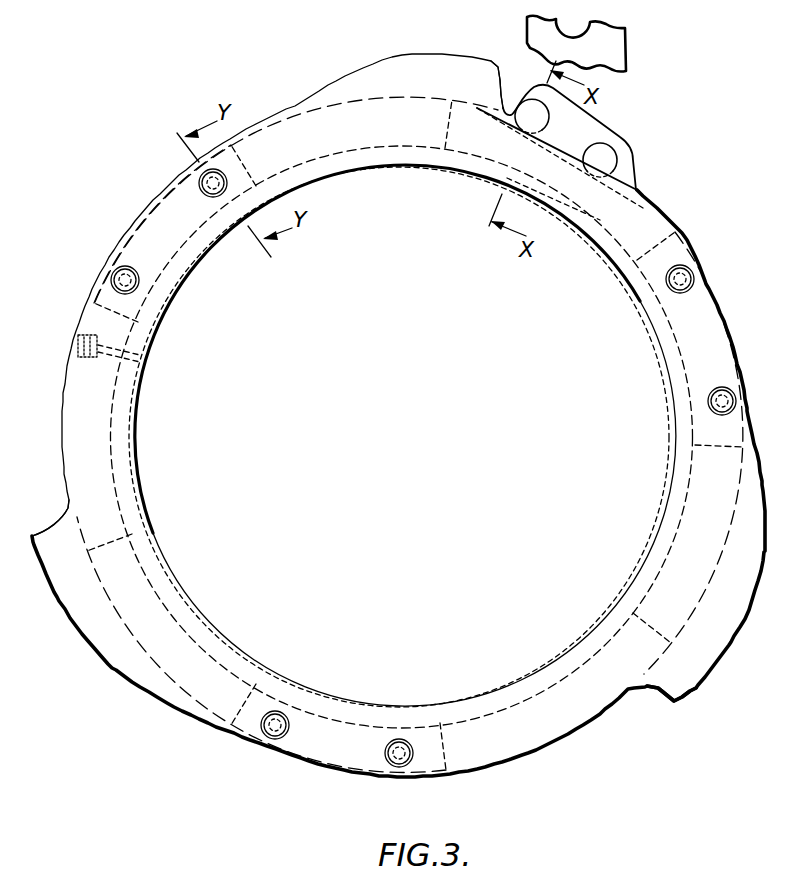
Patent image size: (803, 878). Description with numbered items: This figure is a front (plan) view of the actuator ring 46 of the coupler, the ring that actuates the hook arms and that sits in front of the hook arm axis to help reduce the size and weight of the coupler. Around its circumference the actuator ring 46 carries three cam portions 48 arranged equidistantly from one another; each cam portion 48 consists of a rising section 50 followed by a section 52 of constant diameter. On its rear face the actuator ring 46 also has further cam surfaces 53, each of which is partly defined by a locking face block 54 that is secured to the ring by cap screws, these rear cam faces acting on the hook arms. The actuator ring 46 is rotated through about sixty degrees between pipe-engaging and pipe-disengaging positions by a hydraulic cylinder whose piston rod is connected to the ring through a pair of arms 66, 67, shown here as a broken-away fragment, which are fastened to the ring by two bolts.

The actuator ring 46 is at (753, 612).
The cam portion 48 is at (296, 106).
The rising section 50 is at (337, 82).
The section of constant diameter 52 is at (465, 80).
The cam surface 53 is at (686, 694).
The locking face block 54 is at (147, 220).
The arm 66 is at (617, 57).
The arm 67 is at (628, 54).